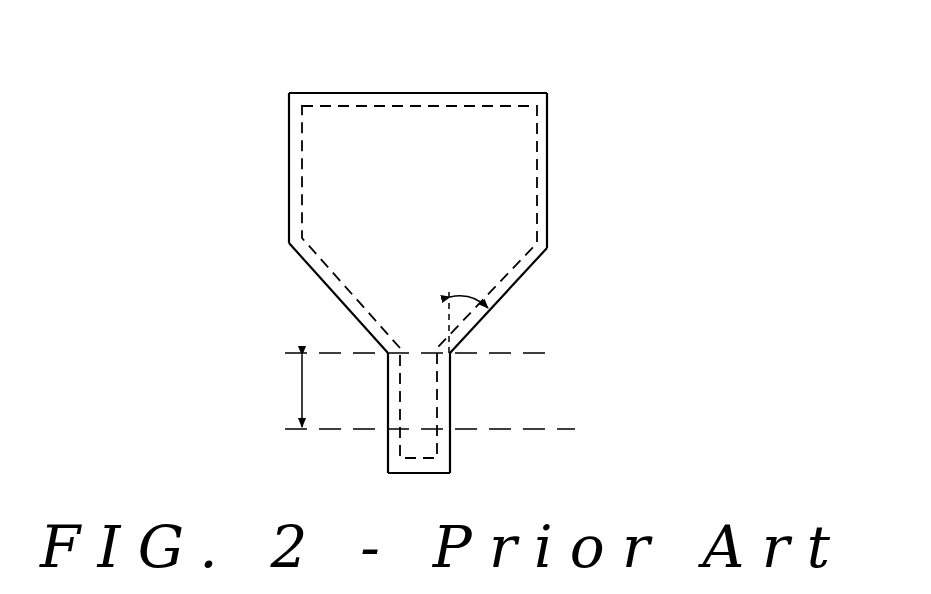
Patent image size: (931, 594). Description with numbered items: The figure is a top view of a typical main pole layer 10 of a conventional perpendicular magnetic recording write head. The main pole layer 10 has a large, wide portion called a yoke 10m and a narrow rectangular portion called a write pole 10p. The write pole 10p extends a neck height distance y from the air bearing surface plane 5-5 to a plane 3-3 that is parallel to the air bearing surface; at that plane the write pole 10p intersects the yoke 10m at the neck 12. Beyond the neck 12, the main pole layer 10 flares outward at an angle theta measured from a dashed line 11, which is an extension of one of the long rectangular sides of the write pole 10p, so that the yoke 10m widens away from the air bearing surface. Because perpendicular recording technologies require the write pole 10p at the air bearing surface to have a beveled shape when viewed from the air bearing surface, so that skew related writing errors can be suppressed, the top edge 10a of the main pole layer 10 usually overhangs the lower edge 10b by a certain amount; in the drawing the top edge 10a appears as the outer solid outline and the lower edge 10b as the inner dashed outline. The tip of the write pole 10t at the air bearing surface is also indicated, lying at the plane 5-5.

The main pole layer 10 is at (434, 257).
The yoke 10m is at (517, 147).
The lower edge 10b is at (320, 279).
The top edge 10a is at (357, 322).
The write pole 10p is at (410, 390).
The tip / bottom 10t is at (450, 430).
The dashed line 11 is at (451, 305).
The neck 12 is at (456, 351).
The plane 3- 3 is at (417, 353).
The ABS plane 5 is at (430, 429).
The neck height distance y is at (291, 391).